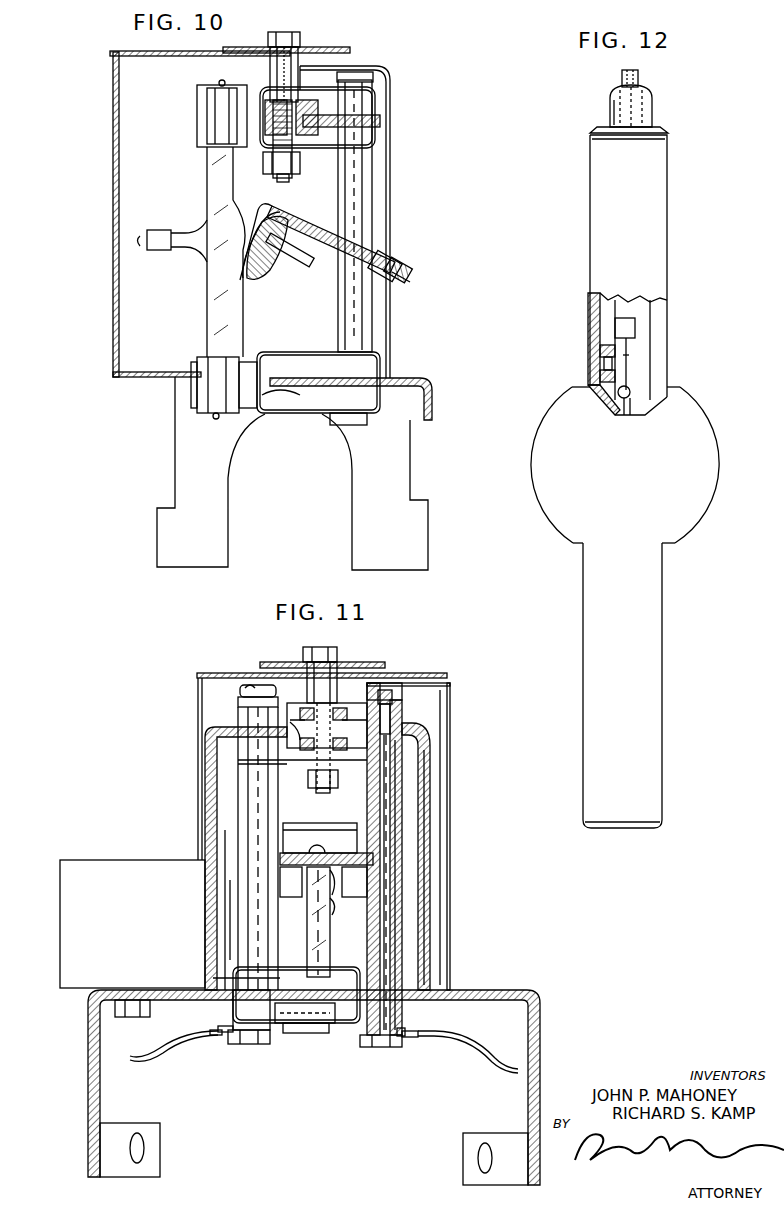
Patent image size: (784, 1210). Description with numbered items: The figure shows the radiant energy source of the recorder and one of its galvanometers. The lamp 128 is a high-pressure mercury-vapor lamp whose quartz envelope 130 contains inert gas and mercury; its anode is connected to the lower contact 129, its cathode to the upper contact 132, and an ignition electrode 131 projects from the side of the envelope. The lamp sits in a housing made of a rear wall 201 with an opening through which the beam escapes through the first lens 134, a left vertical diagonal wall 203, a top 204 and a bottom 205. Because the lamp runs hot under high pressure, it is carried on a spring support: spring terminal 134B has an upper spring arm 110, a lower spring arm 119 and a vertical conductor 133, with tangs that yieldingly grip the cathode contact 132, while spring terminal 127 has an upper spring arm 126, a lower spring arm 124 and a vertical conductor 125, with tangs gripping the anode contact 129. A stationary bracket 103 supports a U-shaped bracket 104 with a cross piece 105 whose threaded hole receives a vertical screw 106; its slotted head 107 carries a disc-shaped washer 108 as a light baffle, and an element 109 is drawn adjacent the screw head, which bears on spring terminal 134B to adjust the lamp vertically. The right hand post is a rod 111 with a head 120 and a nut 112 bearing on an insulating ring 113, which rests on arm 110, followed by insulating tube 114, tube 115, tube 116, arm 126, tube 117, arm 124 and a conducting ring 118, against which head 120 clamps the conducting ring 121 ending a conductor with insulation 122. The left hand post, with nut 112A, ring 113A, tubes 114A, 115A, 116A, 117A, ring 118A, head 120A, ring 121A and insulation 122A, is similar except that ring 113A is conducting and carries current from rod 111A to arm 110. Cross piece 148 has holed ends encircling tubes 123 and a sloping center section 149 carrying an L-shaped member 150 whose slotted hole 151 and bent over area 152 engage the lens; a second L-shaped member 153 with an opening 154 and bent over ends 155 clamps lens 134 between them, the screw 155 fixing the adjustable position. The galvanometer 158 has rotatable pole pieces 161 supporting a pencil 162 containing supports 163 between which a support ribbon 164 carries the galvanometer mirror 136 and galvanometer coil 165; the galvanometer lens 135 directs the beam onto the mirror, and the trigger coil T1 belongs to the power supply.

In FIG. 10, the stationary bracket 103 is at (190, 461).
In FIG. 11, the stationary bracket 103 is at (92, 1057).
In FIG. 10, the U-shaped bracket 104 is at (385, 115).
In FIG. 11, the U-shaped bracket 104 is at (210, 778).
In FIG. 10, the cross piece 105 is at (302, 130).
In FIG. 11, the cross piece 105 is at (310, 732).
In FIG. 10, the vertical screw 106 is at (279, 182).
In FIG. 11, the vertical screw 106 is at (336, 740).
In FIG. 10, the slotted head 107 is at (296, 35).
In FIG. 11, the slotted head 107 is at (325, 650).
In FIG. 10, the disc-shaped washer 108 is at (256, 47).
In FIG. 11, the disc-shaped washer 108 is at (287, 662).
In FIG. 10, the threaded stud 109 is at (302, 55).
In FIG. 11, the threaded stud 109 is at (335, 700).
In FIG. 10, the upper spring arm 110 is at (378, 93).
In FIG. 11, the upper spring arm 110 is at (248, 708).
In FIG. 11, the rod 111 is at (384, 862).
In FIG. 11, the rod 111A is at (252, 685).
In FIG. 10, the nut 112 is at (375, 75).
In FIG. 11, the nut 112 is at (402, 692).
In FIG. 11, the nut 112A is at (240, 690).
In FIG. 11, the insulating ring 113 is at (400, 707).
In FIG. 11, the conducting ring 113A is at (240, 700).
In FIG. 11, the tube of insulating material 114 is at (400, 724).
In FIG. 11, the tube of insulating material 114A is at (238, 760).
In FIG. 11, the tube of insulating material 115 is at (400, 830).
In FIG. 11, the tube of insulating material 115A is at (252, 807).
In FIG. 11, the tube of insulating material 116 is at (400, 903).
In FIG. 11, the tube of insulating material 116A is at (250, 911).
In FIG. 11, the tube of insulating material 117 is at (428, 972).
In FIG. 11, the tube of insulating material 117A is at (240, 979).
In FIG. 11, the conducting ring 118 is at (404, 1030).
In FIG. 11, the conducting ring 118A is at (228, 1026).
In FIG. 10, the lower spring arm 119 is at (368, 142).
In FIG. 11, the lower spring arm 119 is at (230, 745).
In FIG. 11, the head 120 is at (378, 1047).
In FIG. 11, the head 120A is at (248, 1044).
In FIG. 11, the conducting ring 121 is at (406, 1037).
In FIG. 11, the conducting ring 121A is at (230, 1040).
In FIG. 11, the insulation 122 is at (470, 1050).
In FIG. 11, the insulation 122A is at (165, 1052).
In FIG. 11, the tube 123 is at (392, 940).
In FIG. 10, the lower spring arm 124 is at (300, 410).
In FIG. 11, the lower spring arm 124 is at (330, 1033).
In FIG. 10, the vertical conductor 125 is at (260, 392).
In FIG. 11, the vertical conductor 125 is at (316, 1015).
In FIG. 10, the upper spring arm 126 is at (305, 352).
In FIG. 11, the upper spring arm 126 is at (245, 972).
In FIG. 10, the spring terminal 127 is at (190, 390).
In FIG. 10, the lamp 128 is at (194, 290).
In FIG. 11, the lamp 128 is at (290, 950).
In FIG. 10, the lower contact 129 is at (210, 398).
In FIG. 10, the quartz envelope 130 is at (218, 177).
In FIG. 11, the quartz envelope 130 is at (308, 935).
In FIG. 10, the ignition electrode 131 is at (155, 230).
In FIG. 10, the upper contact 132 is at (222, 116).
In FIG. 10, the vertical conductor 133 is at (262, 135).
In FIG. 11, the vertical conductor 133 is at (345, 705).
In FIG. 10, the first lens 134 is at (265, 280).
In FIG. 11, the first lens 134 is at (304, 885).
In FIG. 10, the spring terminal 134B is at (200, 104).
In FIG. 12, the galvanometer lens 135 is at (600, 358).
In FIG. 12, the galvanometer mirror 136 is at (620, 370).
In FIG. 11, the cross piece 148 is at (238, 862).
In FIG. 10, the sloping center section 149 is at (400, 275).
In FIG. 11, the sloping center section 149 is at (332, 916).
In FIG. 10, the L-shaped member 150 is at (405, 272).
In FIG. 11, the L-shaped member 150 is at (330, 885).
In FIG. 10, the slotted hole 151 is at (370, 240).
In FIG. 10, the bent over area 152 is at (258, 238).
In FIG. 10, the second L-shaped member 153 is at (400, 262).
In FIG. 11, the second L-shaped member 153 is at (298, 845).
In FIG. 10, the opening 154 is at (365, 235).
In FIG. 11, the opening 154 is at (320, 853).
In FIG. 10, the bent over ends 155 is at (302, 250).
In FIG. 11, the bent over ends 155 is at (282, 882).
In FIG. 12, the galvanometer 158 is at (683, 257).
In FIG. 12, the rotatable pole pieces 161 is at (690, 430).
In FIG. 12, the pencil 162 is at (660, 190).
In FIG. 12, the supports 163 is at (630, 327).
In FIG. 12, the support ribbon 164 is at (630, 345).
In FIG. 12, the galvanometer coil 165 is at (632, 398).
In FIG. 10, the rear wall 201 is at (390, 163).
In FIG. 10, the left vertical diagonal wall 203 is at (130, 172).
In FIG. 10, the top 204 is at (135, 52).
In FIG. 11, the top 204 is at (220, 673).
In FIG. 10, the bottom 205 is at (118, 380).
In FIG. 11, the trigger coil T1 is at (84, 875).